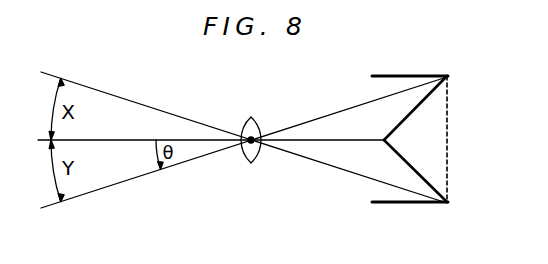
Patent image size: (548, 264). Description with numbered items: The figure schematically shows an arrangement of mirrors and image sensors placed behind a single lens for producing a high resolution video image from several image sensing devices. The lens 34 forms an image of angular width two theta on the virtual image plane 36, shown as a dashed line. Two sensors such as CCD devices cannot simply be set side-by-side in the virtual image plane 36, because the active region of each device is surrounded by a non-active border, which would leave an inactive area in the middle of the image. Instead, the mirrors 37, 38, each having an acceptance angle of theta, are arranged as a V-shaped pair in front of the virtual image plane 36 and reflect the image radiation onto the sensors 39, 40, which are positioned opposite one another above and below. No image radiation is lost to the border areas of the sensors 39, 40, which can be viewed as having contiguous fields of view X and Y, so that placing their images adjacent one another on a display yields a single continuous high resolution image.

The lens 34 is at (250, 117).
The virtual image plane 36 is at (452, 133).
The mirror 37 is at (435, 190).
The mirror 38 is at (427, 88).
The sensor 39 is at (407, 74).
The sensor 40 is at (407, 204).